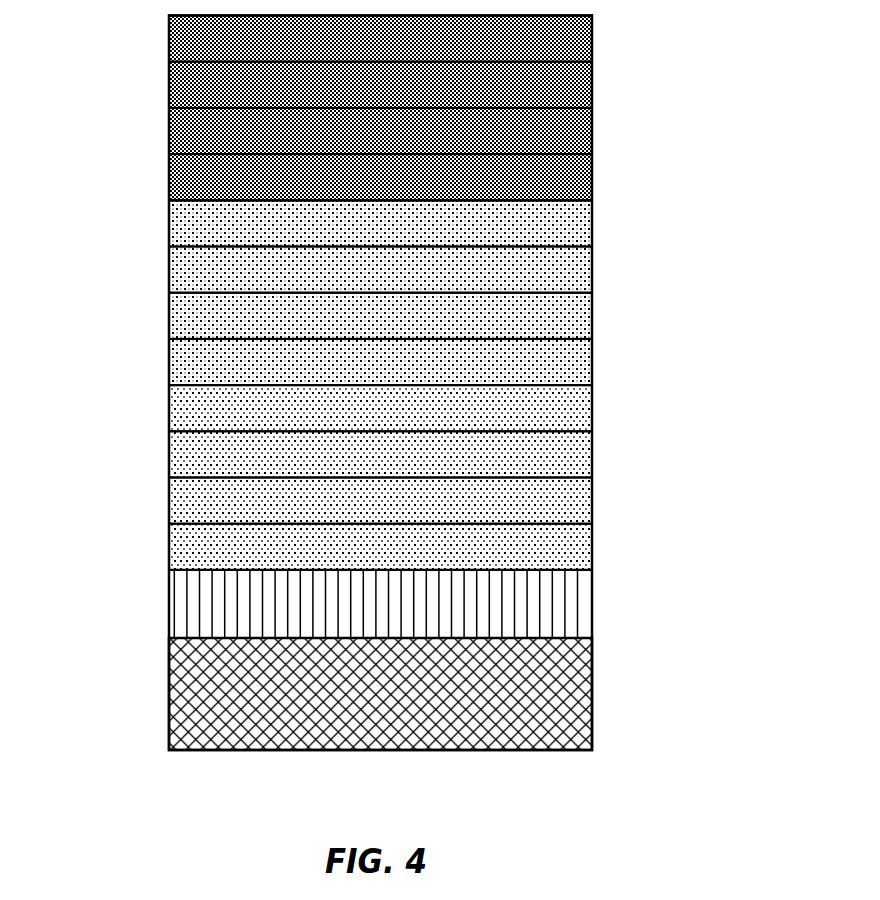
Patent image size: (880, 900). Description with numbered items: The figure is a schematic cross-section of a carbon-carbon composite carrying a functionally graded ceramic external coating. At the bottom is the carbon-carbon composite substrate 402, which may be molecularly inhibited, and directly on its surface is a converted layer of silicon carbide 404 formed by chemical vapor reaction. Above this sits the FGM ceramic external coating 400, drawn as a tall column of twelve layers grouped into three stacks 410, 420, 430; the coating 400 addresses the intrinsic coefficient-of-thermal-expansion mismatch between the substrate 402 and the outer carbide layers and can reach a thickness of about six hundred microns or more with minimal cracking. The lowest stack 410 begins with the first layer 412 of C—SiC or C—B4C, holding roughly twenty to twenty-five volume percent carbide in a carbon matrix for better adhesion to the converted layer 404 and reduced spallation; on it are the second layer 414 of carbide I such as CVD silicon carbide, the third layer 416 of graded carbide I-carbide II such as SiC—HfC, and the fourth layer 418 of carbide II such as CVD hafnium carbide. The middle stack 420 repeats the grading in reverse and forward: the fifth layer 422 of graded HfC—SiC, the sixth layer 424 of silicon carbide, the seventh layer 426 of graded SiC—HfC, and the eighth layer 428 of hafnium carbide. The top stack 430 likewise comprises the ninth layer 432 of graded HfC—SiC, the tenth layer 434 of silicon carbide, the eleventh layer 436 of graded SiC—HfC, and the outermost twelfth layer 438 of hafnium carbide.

The FGM ceramic external coating 400 is at (150, 18).
The carbon-carbon composite substrate 402 is at (360, 706).
The converted layer of silicon carbide 404 is at (360, 623).
The stack 410 is at (608, 390).
The first layer 412 is at (363, 557).
The second layer 414 is at (363, 511).
The third layer 416 is at (363, 465).
The fourth layer 418 is at (363, 419).
The stack 420 is at (608, 203).
The fifth layer 422 is at (363, 372).
The sixth layer 424 is at (363, 326).
The seventh layer 426 is at (363, 280).
The eighth layer 428 is at (363, 234).
The stack 430 is at (608, 16).
The ninth layer 432 is at (363, 188).
The tenth layer 434 is at (363, 141).
The eleventh layer 436 is at (363, 95).
The twelfth layer 438 is at (363, 49).